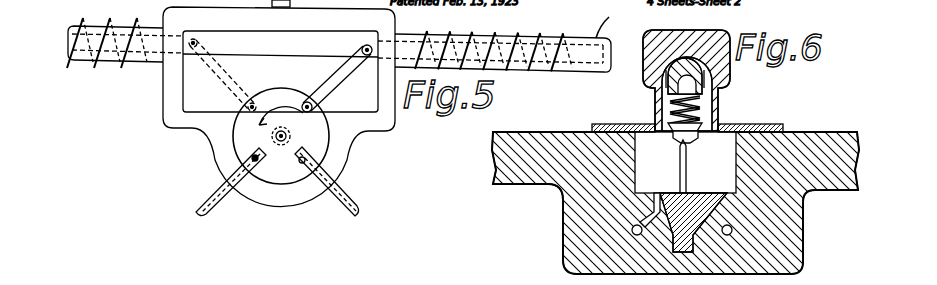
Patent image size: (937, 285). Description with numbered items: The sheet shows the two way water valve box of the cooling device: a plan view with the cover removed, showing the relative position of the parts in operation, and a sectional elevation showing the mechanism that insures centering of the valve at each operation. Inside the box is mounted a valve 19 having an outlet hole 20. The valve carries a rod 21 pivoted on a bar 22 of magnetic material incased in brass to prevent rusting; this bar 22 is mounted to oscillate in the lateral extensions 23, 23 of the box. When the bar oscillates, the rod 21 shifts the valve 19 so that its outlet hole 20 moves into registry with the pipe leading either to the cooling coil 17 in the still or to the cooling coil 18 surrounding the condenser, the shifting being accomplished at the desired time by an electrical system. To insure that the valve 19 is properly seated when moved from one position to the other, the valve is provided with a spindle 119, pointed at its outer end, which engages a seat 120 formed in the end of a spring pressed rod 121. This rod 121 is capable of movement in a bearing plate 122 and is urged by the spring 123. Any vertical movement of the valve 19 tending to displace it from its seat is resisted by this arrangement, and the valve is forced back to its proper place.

In FIG. 5, the cooling coil 17 is at (340, 193).
In FIG. 6, the cooling coil 17 is at (735, 224).
In FIG. 5, the cooling coil 18 is at (228, 184).
In FIG. 6, the cooling coil 18 is at (633, 227).
In FIG. 5, the valve 19 is at (303, 157).
In FIG. 6, the valve 19 is at (703, 194).
In FIG. 5, the outlet hole 20 is at (254, 156).
In FIG. 6, the outlet hole 20 is at (656, 194).
In FIG. 5, the rod 21 is at (346, 76).
In FIG. 5, the bar 22 is at (282, 50).
In FIG. 5, the lateral extensions 23 is at (147, 30).
In FIG. 6, the spindle 119 is at (681, 158).
In FIG. 6, the seat 120 is at (692, 139).
In FIG. 6, the spring pressed rod 121 is at (690, 119).
In FIG. 6, the bearing plate 122 is at (738, 35).
In FIG. 6, the spring 123 is at (719, 104).